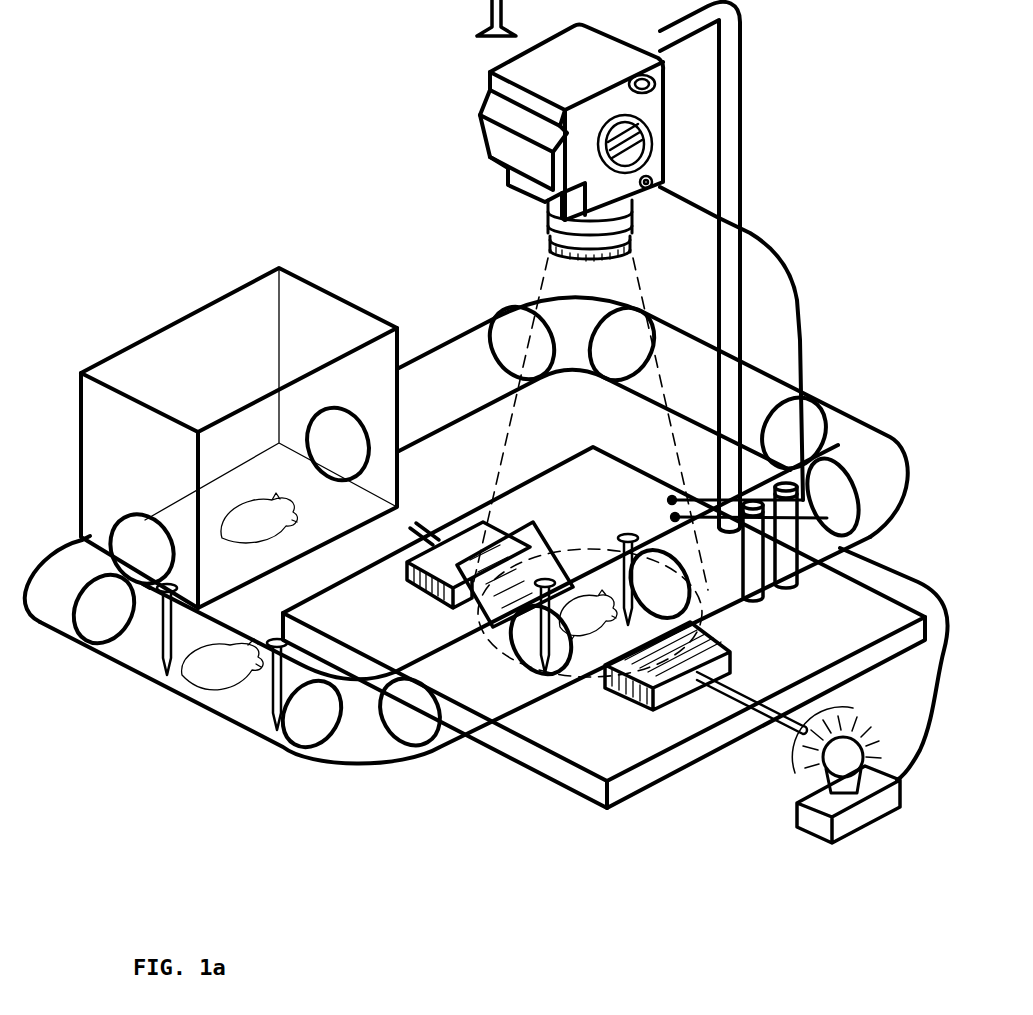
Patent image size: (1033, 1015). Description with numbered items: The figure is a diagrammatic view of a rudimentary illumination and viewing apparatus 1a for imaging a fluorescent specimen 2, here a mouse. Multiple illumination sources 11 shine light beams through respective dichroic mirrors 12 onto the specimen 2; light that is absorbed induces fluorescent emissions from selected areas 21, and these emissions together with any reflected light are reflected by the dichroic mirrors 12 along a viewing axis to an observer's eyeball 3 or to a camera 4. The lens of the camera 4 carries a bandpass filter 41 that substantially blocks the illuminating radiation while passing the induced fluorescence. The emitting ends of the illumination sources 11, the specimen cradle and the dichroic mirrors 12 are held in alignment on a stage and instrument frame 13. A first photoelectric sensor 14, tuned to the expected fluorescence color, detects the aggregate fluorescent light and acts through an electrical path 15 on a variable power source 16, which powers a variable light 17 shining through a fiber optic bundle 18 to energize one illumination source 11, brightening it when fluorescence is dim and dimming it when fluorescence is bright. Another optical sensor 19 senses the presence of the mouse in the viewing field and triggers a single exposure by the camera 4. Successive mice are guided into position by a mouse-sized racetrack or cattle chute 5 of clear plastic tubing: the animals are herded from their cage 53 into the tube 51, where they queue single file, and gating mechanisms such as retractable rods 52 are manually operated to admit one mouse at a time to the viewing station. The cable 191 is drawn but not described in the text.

The illumination and viewing apparatus 1a is at (487, 209).
The specimen 2 is at (590, 467).
The observer's eyeball 3 is at (490, 14).
The camera 4 is at (575, 77).
The bandpass filter 41 is at (636, 243).
The racetrack or cattle chute 5 is at (436, 349).
The tube 51 is at (222, 706).
The retractable rods 52 is at (177, 583).
The cage 53 is at (250, 365).
The illumination sources 11 is at (427, 590).
The dichroic mirrors 12 is at (539, 522).
The stage and instrument frame 13 is at (797, 656).
The first photoelectric sensor 14 is at (670, 500).
The electrical path 15 is at (893, 562).
The variable power source 16 is at (863, 814).
The variable light 17 is at (870, 757).
The fiber optic bundle 18 is at (770, 726).
The optical sensor 19 is at (673, 516).
The selected areas 21 is at (593, 604).
The camera cable 191 is at (801, 333).